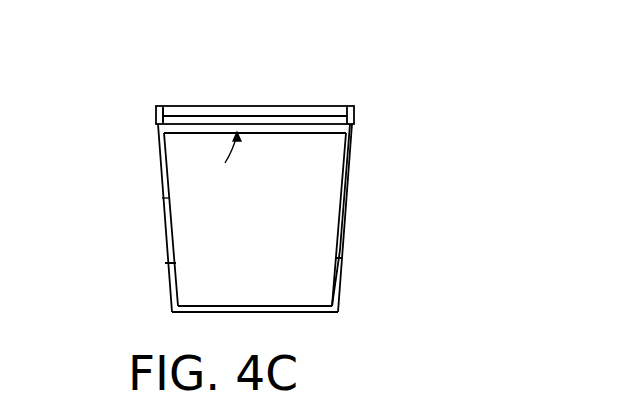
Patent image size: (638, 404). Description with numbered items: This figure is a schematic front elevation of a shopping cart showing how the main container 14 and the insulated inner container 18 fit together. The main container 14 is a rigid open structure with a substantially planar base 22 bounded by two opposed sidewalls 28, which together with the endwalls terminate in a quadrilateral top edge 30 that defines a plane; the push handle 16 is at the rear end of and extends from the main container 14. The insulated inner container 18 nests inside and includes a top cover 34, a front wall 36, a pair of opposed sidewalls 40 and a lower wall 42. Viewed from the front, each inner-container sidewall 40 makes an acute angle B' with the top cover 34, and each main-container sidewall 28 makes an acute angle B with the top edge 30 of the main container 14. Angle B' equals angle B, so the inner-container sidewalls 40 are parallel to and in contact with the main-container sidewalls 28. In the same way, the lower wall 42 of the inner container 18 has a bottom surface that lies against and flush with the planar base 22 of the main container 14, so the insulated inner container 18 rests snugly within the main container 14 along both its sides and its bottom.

The main container 14 is at (353, 163).
The push handle 16 is at (317, 108).
The insulated inner container 18 is at (317, 197).
The planar base 22 is at (313, 315).
The sidewalls 28 is at (346, 224).
The top edge 30 is at (183, 125).
The top cover 34 is at (263, 133).
The front wall 36 is at (308, 151).
The sidewalls 40 is at (335, 258).
The lower wall 42 is at (220, 306).
The angle B is at (192, 187).
The angle B' is at (204, 151).